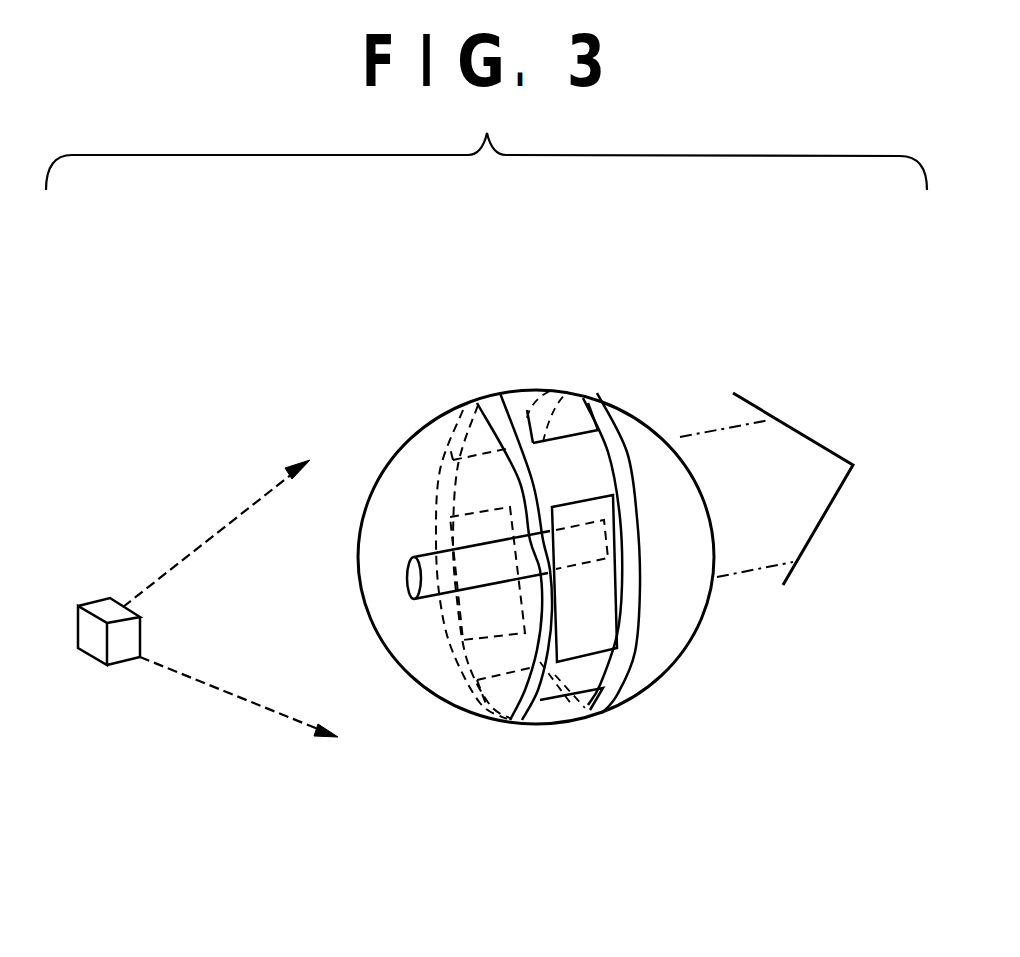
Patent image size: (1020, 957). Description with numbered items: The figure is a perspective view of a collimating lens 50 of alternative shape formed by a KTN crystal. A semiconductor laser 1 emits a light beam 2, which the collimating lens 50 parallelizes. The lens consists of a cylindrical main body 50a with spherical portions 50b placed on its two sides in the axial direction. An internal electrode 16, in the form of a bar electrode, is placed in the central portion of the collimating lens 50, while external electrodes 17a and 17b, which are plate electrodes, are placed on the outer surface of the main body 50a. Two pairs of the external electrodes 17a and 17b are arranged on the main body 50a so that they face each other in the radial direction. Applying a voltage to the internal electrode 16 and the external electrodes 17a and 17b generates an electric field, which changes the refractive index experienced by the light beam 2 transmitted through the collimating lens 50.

The semiconductor laser 1 is at (105, 602).
The light beam 2 is at (243, 504).
The internal electrode 16 is at (437, 595).
The external electrode 17a is at (547, 403).
The external electrode 17b is at (603, 632).
The collimating lens 50 is at (541, 546).
The cylindrical main body 50a is at (614, 682).
The spherical portions 50b is at (398, 457).